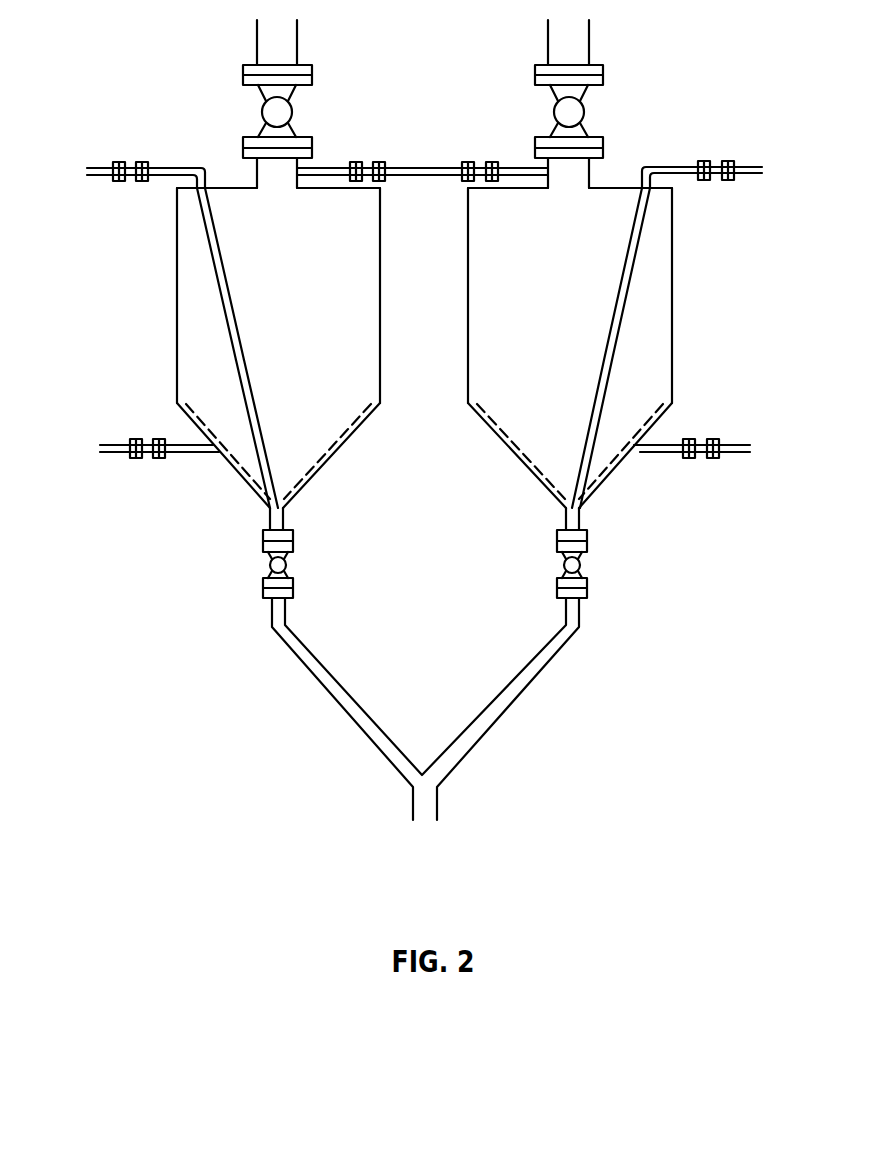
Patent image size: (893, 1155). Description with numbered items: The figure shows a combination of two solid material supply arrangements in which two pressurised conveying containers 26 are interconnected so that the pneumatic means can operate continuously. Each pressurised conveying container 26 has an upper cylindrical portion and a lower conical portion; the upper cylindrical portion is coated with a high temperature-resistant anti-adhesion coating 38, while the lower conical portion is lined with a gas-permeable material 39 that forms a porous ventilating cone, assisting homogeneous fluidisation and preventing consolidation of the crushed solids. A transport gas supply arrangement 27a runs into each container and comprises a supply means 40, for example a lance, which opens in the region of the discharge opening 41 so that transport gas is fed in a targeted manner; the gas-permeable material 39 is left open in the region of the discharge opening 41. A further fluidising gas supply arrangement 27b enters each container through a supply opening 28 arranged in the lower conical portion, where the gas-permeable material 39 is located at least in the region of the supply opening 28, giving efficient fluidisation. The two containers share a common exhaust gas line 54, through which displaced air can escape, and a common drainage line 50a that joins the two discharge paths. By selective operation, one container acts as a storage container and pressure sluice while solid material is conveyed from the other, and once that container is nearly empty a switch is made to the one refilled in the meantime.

The pressurised conveying container 26 is at (177, 302).
The transport gas supply arrangement 27a is at (238, 323).
The fluidising gas supply arrangement 27b is at (175, 442).
The supply opening 28 is at (213, 453).
The anti-adhesion coating 38 is at (380, 250).
The gas-permeable material 39 is at (346, 436).
The supply means 40 is at (244, 393).
The discharge opening 41 is at (282, 513).
The common drainage line 50a is at (422, 812).
The exhaust gas line 54 is at (423, 165).